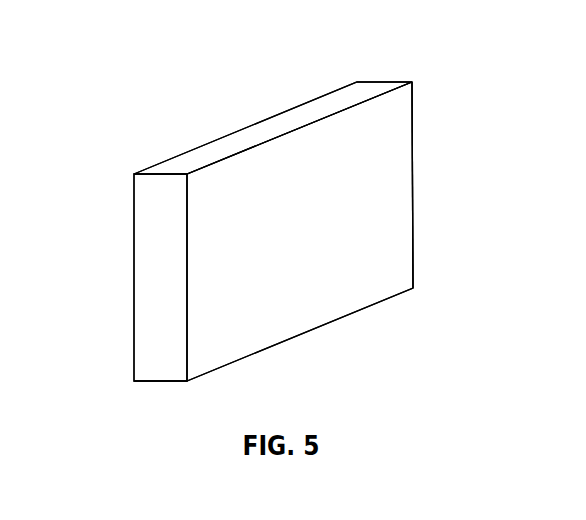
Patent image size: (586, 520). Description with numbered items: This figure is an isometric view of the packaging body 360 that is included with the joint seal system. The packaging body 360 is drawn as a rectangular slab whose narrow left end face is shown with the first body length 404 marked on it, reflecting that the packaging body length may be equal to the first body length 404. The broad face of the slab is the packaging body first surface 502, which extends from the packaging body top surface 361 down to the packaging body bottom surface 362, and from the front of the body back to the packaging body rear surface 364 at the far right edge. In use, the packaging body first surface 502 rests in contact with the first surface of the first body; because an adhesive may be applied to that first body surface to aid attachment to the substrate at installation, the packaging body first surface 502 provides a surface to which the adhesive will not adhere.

The packaging body 360 is at (147, 68).
The packaging body top surface 361 is at (273, 122).
The packaging body bottom surface 362 is at (162, 381).
The packaging body rear surface 364 is at (412, 185).
The first body length 404 is at (141, 290).
The packaging body first surface 502 is at (327, 269).